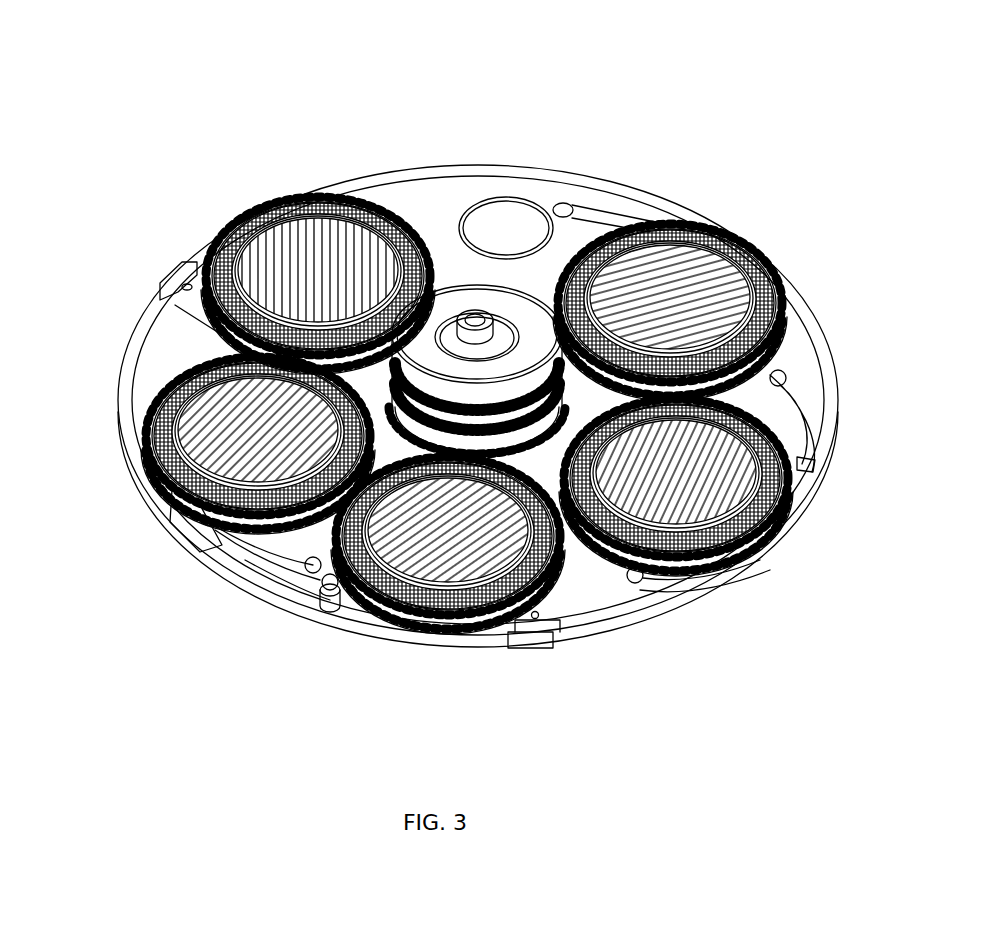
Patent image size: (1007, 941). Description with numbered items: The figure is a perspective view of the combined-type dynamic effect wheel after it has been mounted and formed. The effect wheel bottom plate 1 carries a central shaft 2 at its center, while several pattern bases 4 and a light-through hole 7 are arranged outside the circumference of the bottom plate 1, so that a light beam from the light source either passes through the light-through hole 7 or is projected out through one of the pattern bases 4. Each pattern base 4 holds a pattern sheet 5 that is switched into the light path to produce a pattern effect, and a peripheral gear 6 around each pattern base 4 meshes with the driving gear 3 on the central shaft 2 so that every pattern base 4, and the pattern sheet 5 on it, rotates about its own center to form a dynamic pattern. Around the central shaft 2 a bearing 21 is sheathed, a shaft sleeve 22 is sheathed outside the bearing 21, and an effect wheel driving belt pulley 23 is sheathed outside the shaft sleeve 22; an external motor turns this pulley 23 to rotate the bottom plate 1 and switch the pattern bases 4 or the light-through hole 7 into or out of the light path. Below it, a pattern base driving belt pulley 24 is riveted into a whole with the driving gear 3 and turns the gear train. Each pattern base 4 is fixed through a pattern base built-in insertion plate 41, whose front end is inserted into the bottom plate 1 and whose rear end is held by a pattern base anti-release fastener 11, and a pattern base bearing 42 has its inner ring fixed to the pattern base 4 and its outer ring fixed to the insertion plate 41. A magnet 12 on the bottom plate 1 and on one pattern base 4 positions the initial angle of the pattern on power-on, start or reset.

The effect wheel bottom plate 1 is at (457, 168).
The central shaft 2 is at (470, 300).
The driving gear 3 is at (572, 538).
The pattern base 4 is at (743, 263).
The pattern base built-in insertion plate 41 is at (739, 303).
The pattern base bearing 42 is at (743, 359).
The pattern sheet 5 is at (670, 239).
The peripheral gear 6 is at (681, 257).
The light-through hole 7 is at (508, 200).
The pattern base anti-release fastener 11 is at (538, 650).
The magnet 12 is at (150, 456).
The bearing 21 is at (790, 488).
The shaft sleeve 22 is at (427, 355).
The effect wheel driving belt pulley 23 is at (466, 403).
The pattern base driving belt pulley 24 is at (745, 550).